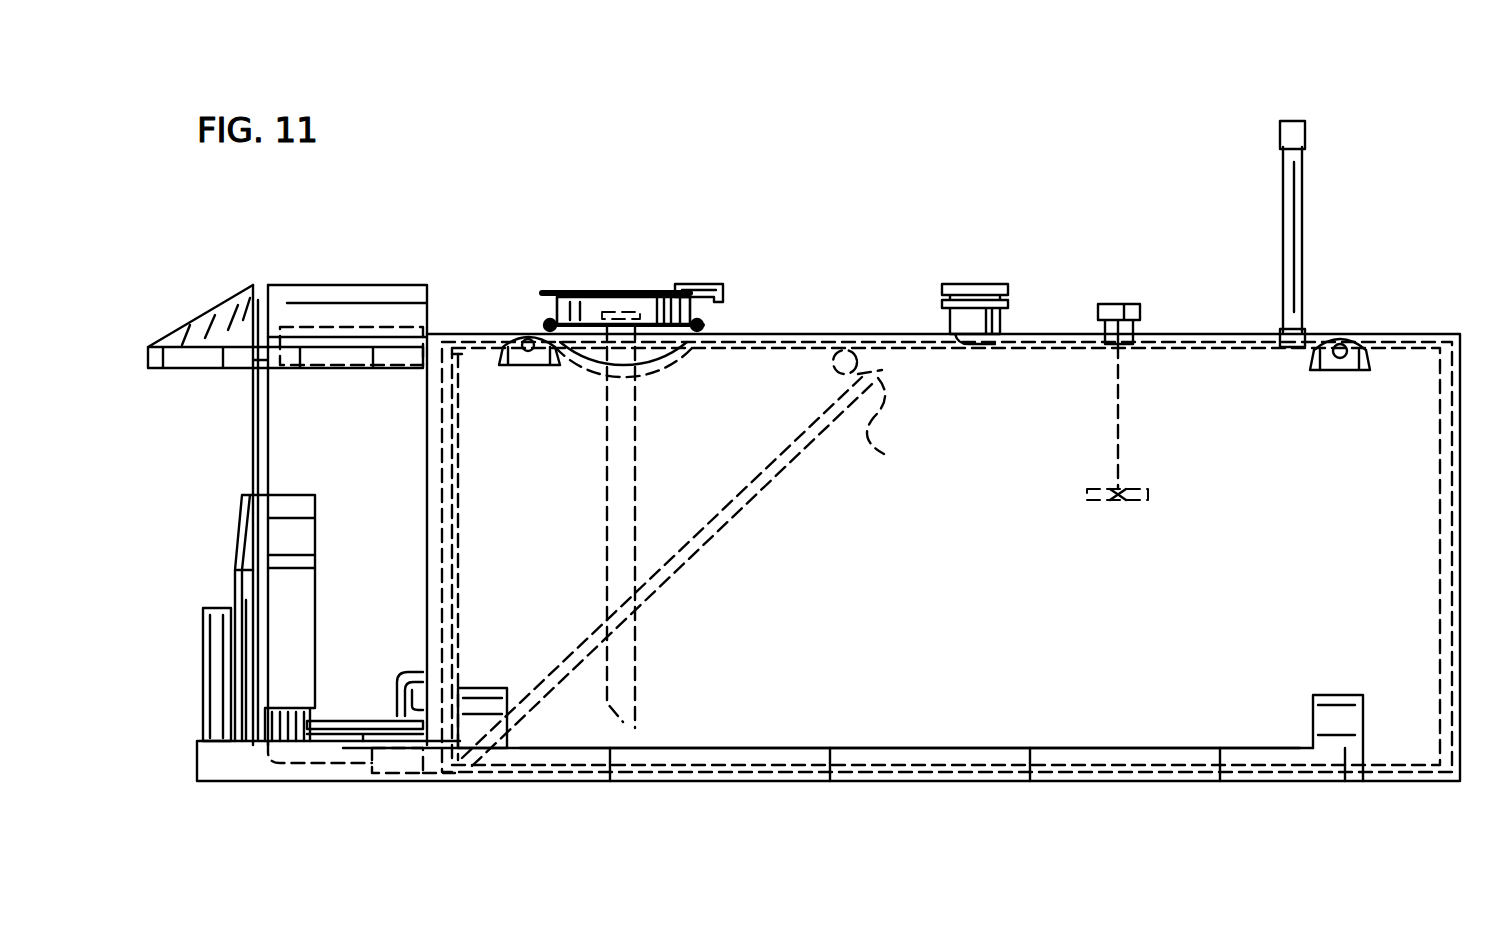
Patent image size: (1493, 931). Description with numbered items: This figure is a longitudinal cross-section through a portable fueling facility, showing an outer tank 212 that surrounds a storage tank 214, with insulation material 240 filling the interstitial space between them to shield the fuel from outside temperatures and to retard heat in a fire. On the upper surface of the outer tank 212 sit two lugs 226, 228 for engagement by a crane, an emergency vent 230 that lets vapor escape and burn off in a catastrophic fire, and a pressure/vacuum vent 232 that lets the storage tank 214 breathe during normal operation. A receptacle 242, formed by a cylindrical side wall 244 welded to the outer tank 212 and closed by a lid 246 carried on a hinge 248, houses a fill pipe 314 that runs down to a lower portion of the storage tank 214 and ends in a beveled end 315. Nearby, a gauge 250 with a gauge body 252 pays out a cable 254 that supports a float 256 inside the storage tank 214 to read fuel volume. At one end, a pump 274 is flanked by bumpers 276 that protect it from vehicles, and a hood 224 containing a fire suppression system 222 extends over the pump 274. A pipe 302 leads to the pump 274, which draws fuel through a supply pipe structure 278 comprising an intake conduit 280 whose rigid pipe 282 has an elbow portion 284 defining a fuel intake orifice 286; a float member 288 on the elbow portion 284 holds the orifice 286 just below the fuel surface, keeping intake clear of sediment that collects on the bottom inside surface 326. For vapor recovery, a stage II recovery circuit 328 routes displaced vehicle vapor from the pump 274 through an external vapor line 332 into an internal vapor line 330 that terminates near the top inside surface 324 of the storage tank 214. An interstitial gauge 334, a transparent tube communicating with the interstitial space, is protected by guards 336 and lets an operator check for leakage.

The outer tank 212 is at (1464, 506).
The storage tank 214 is at (1446, 568).
The fire suppression system 222 is at (365, 328).
The hood 224 is at (224, 332).
The lug 226 is at (510, 346).
The lug 228 is at (1348, 352).
The emergency vent 230 is at (964, 284).
The pressure/vacuum vent 232 is at (1304, 204).
The insulation material 240 is at (1448, 455).
The receptacle 242 is at (640, 280).
The cylindrical side wall 244 is at (566, 310).
The lid 246 is at (580, 298).
The hinge 248 is at (718, 290).
The gauge 250 is at (1096, 283).
The gauge body 252 is at (1150, 295).
The cable 254 is at (1118, 463).
The float 256 is at (1140, 504).
The pump 274 is at (302, 496).
The bumpers 276 is at (206, 612).
The supply pipe structure 278 is at (515, 735).
The intake conduit 280 is at (667, 571).
The rigid pipe 282 is at (708, 533).
The elbow portion 284 is at (882, 370).
The fuel intake orifice 286 is at (904, 422).
The float member 288 is at (836, 351).
The pipe 302 is at (318, 780).
The fill pipe 314 is at (637, 440).
The beveled end 315 is at (642, 788).
The top inside surface 324 is at (1080, 355).
The bottom inside surface 326 is at (762, 765).
The stage II recovery circuit 328 is at (468, 567).
The internal vapor line 330 is at (459, 500).
The external vapor line 332 is at (352, 708).
The interstitial gauge 334 is at (415, 675).
The guards 336 is at (402, 692).